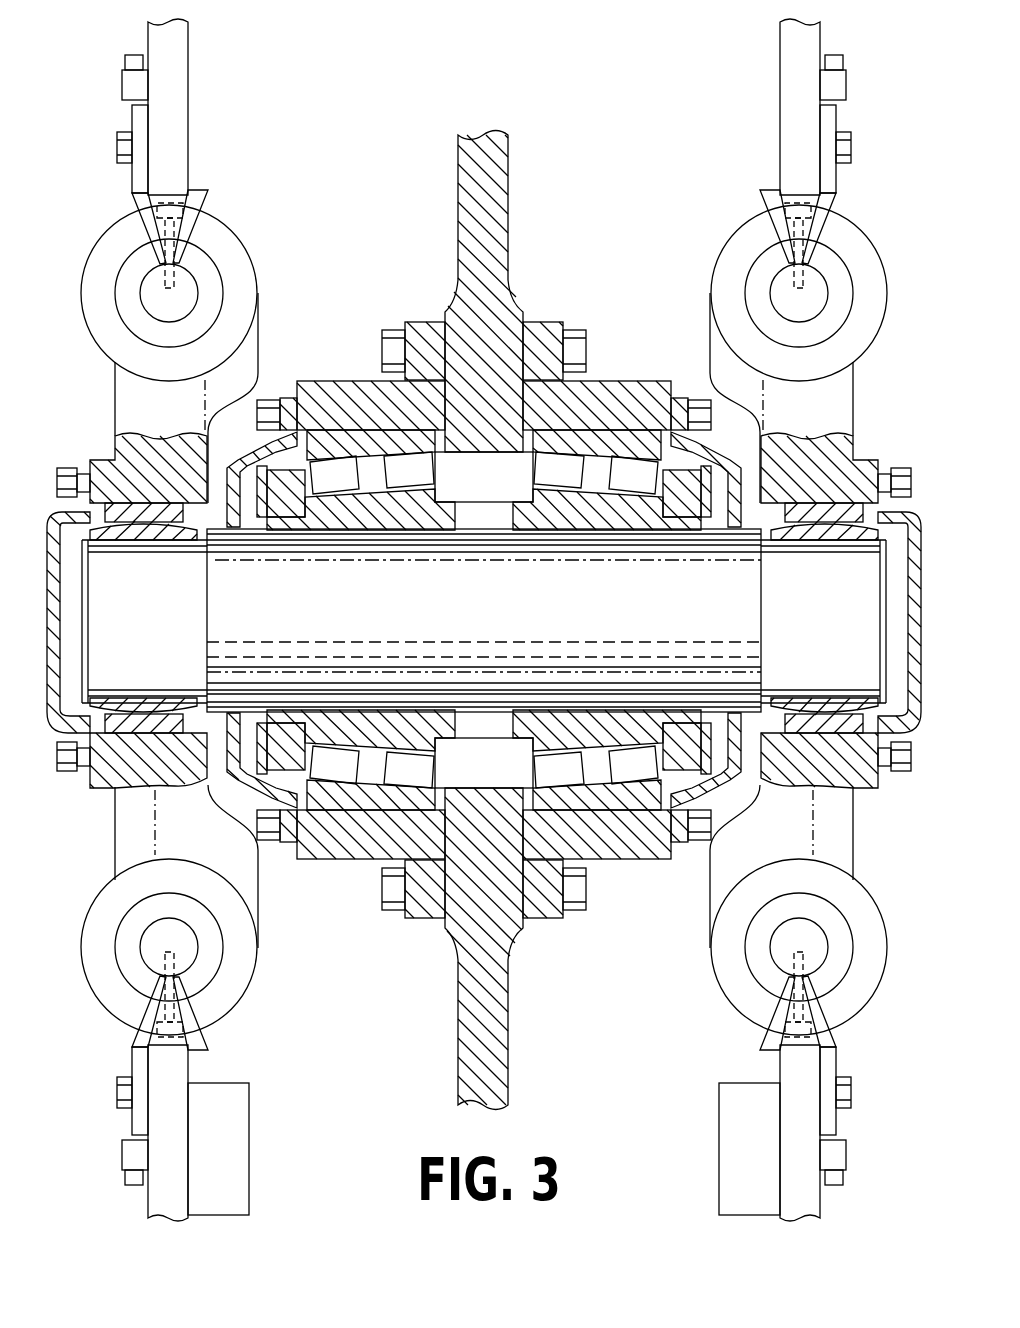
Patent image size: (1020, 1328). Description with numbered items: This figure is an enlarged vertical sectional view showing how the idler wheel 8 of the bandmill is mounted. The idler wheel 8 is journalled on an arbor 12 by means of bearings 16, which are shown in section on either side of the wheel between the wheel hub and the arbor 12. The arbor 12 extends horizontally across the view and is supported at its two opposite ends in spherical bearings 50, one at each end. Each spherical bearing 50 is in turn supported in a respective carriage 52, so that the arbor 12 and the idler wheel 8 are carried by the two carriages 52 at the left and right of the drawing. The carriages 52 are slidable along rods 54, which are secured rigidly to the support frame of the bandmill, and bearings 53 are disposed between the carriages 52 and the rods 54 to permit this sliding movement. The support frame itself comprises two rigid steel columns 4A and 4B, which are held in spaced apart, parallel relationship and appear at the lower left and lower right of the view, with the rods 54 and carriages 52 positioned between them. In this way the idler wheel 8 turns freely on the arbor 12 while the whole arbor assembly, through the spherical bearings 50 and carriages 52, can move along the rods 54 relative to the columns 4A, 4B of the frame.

The idler wheel 8 is at (462, 1073).
The arbor 12 is at (408, 634).
The bearings 16 is at (355, 823).
The spherical bearings 50 is at (108, 773).
The carriages 52 is at (115, 822).
The bearings 53 is at (842, 937).
The rods 54 is at (187, 955).
The column 4A is at (148, 1202).
The column 4B is at (820, 1212).